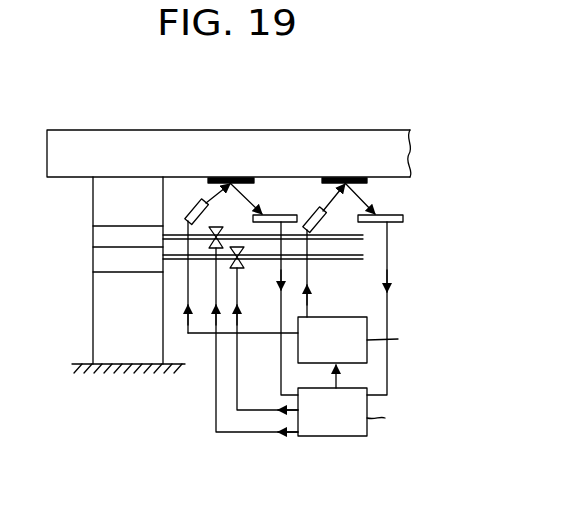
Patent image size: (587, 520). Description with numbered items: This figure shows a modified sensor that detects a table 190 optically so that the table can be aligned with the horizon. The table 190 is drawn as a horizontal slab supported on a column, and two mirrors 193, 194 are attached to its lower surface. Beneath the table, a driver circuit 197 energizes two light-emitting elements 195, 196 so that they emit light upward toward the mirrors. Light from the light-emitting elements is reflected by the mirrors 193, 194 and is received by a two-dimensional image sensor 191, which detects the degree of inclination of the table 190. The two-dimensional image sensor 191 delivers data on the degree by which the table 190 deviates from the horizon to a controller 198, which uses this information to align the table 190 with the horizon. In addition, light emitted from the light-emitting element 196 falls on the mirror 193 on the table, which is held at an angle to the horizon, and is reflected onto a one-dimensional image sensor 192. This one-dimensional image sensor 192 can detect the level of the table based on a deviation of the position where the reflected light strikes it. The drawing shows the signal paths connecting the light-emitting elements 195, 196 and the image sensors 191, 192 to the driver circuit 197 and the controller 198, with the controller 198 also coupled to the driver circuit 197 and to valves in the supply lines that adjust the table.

The table 190 is at (210, 130).
The two-dimensional image sensor 191 is at (395, 216).
The one-dimensional image sensor 192 is at (282, 213).
The mirror 193 is at (226, 177).
The mirror 194 is at (336, 177).
The light-emitting element 195 is at (309, 213).
The light-emitting element 196 is at (199, 200).
The driver circuit 197 is at (328, 317).
The controller 198 is at (340, 437).